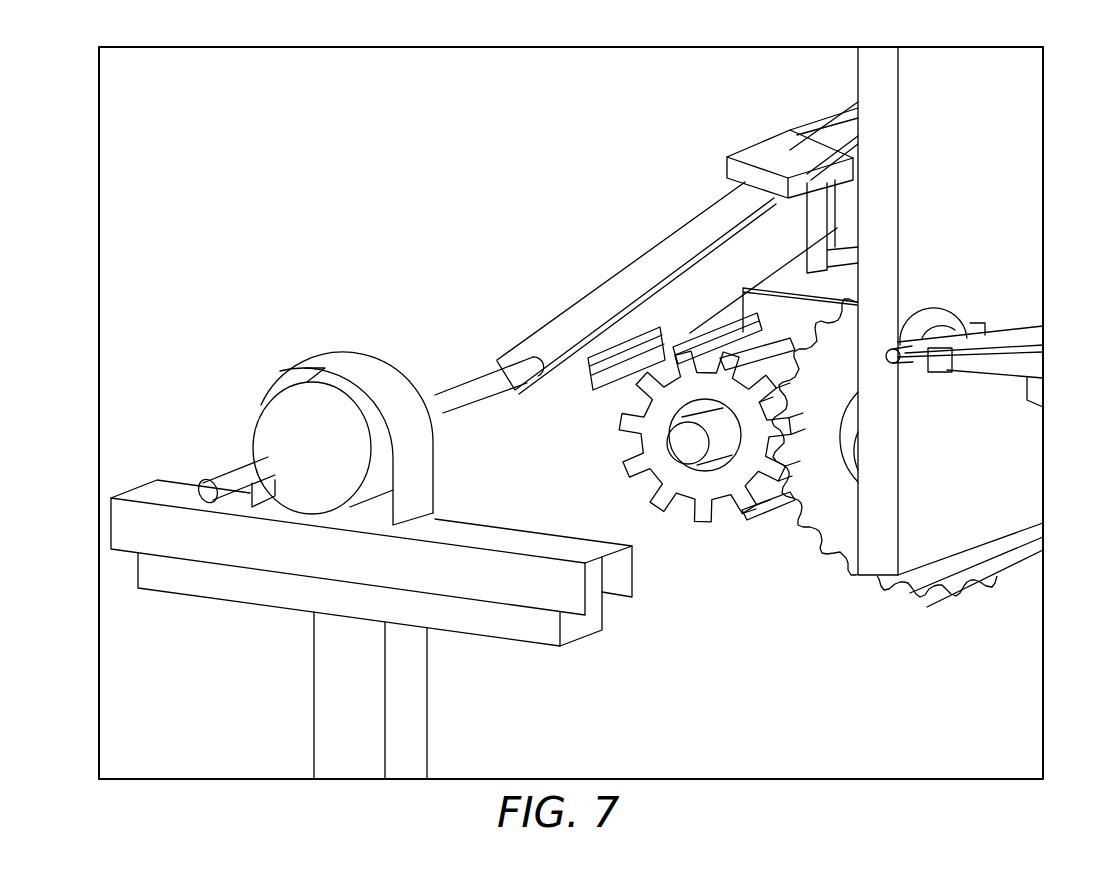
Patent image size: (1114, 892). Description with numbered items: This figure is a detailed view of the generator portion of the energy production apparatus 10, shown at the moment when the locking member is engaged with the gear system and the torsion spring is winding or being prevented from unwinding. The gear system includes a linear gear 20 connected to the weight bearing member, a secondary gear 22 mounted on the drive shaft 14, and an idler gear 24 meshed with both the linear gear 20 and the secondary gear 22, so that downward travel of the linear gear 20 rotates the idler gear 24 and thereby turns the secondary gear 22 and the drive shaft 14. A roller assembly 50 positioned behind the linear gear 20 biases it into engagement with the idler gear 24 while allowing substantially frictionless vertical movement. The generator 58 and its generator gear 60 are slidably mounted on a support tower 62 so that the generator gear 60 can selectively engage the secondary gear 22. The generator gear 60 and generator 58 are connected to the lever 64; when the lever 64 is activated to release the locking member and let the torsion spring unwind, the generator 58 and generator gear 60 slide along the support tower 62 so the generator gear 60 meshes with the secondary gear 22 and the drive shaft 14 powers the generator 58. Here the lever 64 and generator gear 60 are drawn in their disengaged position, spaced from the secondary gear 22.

The energy production apparatus 10 is at (330, 230).
The drive shaft 14 is at (690, 442).
The linear gear 20 is at (875, 82).
The secondary gear 22 is at (700, 512).
The idler gear 24 is at (832, 563).
The roller assembly 50 is at (945, 325).
The generator 58 is at (270, 408).
The generator gear 60 is at (578, 390).
The support tower 62 is at (405, 703).
The lever 64 is at (683, 243).